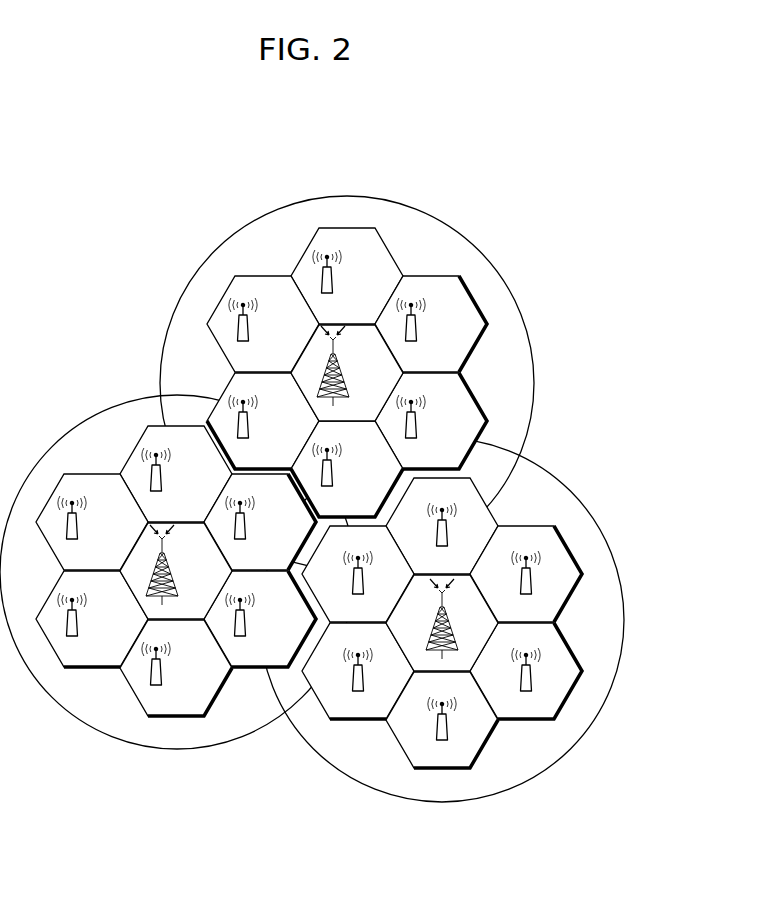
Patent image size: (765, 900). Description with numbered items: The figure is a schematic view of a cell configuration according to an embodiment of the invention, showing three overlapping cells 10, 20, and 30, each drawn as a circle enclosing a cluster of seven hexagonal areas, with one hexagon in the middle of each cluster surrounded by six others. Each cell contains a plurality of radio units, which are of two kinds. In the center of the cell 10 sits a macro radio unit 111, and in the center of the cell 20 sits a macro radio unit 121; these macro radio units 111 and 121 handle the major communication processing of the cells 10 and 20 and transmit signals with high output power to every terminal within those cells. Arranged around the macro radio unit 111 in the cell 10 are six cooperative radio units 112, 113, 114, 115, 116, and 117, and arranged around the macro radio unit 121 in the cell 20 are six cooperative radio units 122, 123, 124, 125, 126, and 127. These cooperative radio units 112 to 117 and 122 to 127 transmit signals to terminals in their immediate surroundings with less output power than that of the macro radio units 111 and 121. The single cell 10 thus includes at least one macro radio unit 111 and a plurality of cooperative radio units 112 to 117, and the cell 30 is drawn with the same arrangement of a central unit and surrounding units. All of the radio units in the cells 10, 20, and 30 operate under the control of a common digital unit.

The cell 10 is at (95, 414).
The cell 20 is at (408, 202).
The cell 30 is at (438, 802).
The macro radio unit 111 is at (176, 571).
The cooperative radio unit 112 is at (92, 619).
The cooperative radio unit 113 is at (176, 668).
The cooperative radio unit 114 is at (260, 619).
The cooperative radio unit 115 is at (260, 522).
The cooperative radio unit 116 is at (176, 474).
The cooperative radio unit 117 is at (92, 522).
The macro radio unit 121 is at (347, 373).
The cooperative radio unit 122 is at (263, 421).
The cooperative radio unit 123 is at (347, 469).
The cooperative radio unit 124 is at (431, 421).
The cooperative radio unit 125 is at (431, 324).
The cooperative radio unit 126 is at (347, 276).
The cooperative radio unit 127 is at (263, 324).